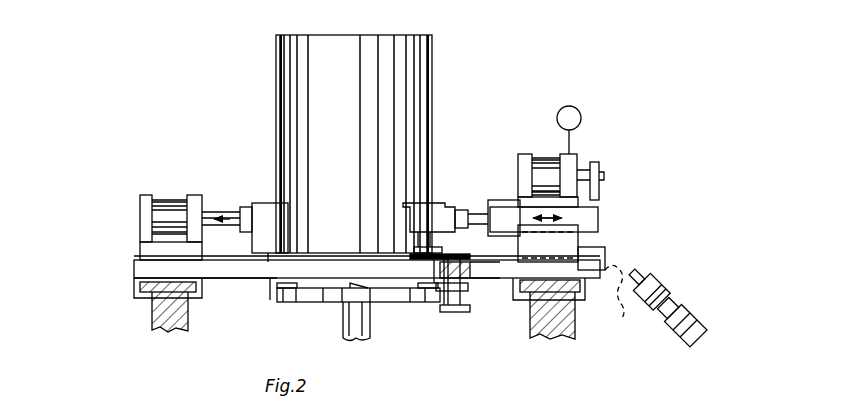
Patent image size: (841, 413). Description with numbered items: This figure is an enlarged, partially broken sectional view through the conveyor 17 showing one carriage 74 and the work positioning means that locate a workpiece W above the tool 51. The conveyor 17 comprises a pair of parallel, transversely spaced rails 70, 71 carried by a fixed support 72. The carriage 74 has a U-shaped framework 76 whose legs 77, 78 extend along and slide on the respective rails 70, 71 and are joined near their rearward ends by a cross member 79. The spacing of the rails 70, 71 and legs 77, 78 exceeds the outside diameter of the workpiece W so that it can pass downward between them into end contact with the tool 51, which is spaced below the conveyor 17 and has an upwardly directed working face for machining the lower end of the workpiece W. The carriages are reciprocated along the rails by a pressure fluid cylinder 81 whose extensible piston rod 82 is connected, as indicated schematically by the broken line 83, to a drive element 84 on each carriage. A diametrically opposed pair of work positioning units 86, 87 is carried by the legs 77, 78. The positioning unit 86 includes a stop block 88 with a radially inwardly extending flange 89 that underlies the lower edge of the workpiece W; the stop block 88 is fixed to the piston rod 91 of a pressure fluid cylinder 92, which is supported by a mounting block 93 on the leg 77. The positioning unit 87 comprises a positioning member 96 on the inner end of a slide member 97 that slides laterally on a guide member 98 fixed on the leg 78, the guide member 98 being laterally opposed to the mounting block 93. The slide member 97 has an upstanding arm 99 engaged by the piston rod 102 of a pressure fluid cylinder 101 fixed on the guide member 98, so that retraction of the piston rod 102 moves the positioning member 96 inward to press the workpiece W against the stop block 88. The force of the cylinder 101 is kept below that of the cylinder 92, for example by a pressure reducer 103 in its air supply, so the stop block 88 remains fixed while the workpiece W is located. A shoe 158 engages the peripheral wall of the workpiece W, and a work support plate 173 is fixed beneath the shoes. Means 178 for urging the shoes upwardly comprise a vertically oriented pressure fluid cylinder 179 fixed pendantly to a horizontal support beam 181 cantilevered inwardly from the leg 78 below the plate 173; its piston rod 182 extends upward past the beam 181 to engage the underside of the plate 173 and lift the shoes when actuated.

The workpiece W is at (420, 93).
The conveyor 17 is at (128, 262).
The leg 77 is at (143, 272).
The rail 70 is at (148, 288).
The fixed support 72 is at (168, 308).
The work positioning unit 86 is at (147, 195).
The pressure fluid cylinder 92 is at (170, 205).
The mounting block 93 is at (147, 250).
The piston rod 91 is at (212, 214).
The stop block 88 is at (265, 212).
The flange 89 is at (277, 256).
The framework 76 is at (345, 285).
The cross member 79 is at (392, 272).
The tool 51 is at (281, 294).
The carriage 74 is at (224, 290).
The shoe 158 is at (424, 202).
The positioning member 96 is at (466, 200).
The piston rod 182 is at (456, 272).
The support beam 181 is at (496, 280).
The work support plate 173 is at (430, 262).
The pressure fluid cylinder 179 is at (449, 300).
The means for urging shoes upwardly 178 is at (446, 320).
The work positioning unit 87 is at (580, 156).
The pressure fluid cylinder 101 is at (542, 163).
The pressure reducer 103 is at (580, 108).
The piston rod 102 is at (592, 162).
The arm 99 is at (590, 202).
The slide member 97 is at (600, 218).
The guide member 98 is at (582, 238).
The drive element 84 is at (598, 258).
The rail 71 is at (523, 298).
The leg 78 is at (580, 292).
The broken line connection 83 is at (619, 300).
The piston rod 82 is at (648, 275).
The pressure fluid cylinder 81 is at (690, 304).